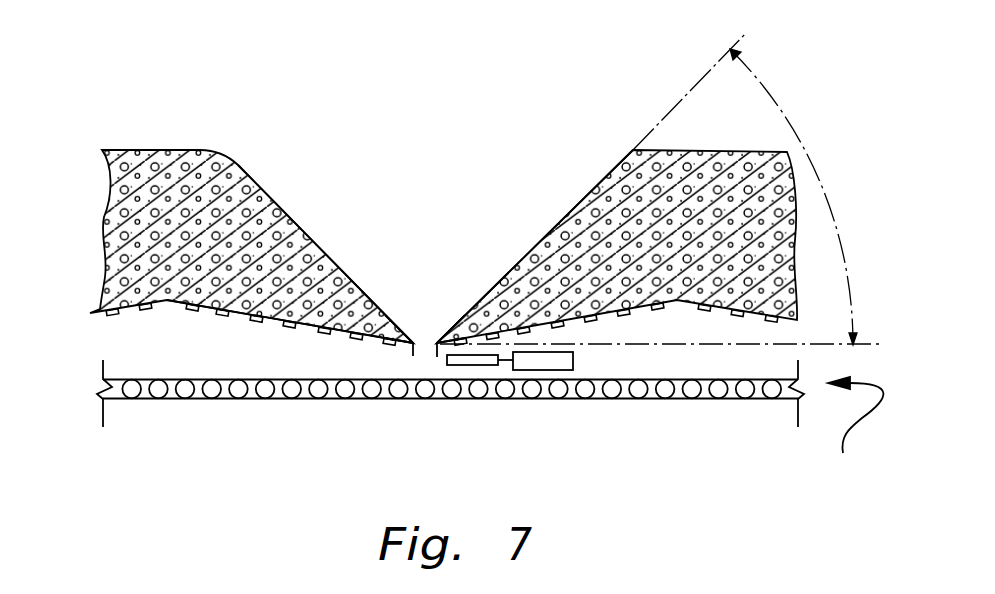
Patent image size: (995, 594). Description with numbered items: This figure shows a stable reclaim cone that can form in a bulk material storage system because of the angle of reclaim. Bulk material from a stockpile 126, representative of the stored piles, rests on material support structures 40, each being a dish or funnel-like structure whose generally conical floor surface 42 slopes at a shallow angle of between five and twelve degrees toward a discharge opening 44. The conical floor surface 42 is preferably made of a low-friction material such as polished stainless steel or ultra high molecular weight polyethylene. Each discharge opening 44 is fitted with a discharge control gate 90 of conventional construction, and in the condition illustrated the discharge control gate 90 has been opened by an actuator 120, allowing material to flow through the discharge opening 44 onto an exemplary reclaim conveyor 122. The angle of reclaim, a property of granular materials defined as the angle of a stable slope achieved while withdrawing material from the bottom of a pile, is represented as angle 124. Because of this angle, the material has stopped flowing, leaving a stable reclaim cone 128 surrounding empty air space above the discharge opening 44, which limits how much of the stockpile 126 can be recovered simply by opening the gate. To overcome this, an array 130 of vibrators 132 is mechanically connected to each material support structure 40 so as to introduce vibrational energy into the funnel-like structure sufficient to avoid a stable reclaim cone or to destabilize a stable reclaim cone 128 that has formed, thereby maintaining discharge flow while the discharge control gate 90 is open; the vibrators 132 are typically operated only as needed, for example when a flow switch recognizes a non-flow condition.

The stockpile 126 is at (138, 170).
The stable reclaim cone 128 is at (290, 237).
The material support structure 40 is at (248, 314).
The conical floor surface 42 is at (349, 320).
The discharge opening 44 is at (436, 343).
The vibrator 132 is at (325, 331).
The reclaim conveyor 122 is at (155, 380).
The discharge control gate 90 is at (470, 366).
The actuator 120 is at (575, 362).
The angle of reclaim 124 is at (783, 112).
The array of vibrators 130 is at (853, 435).